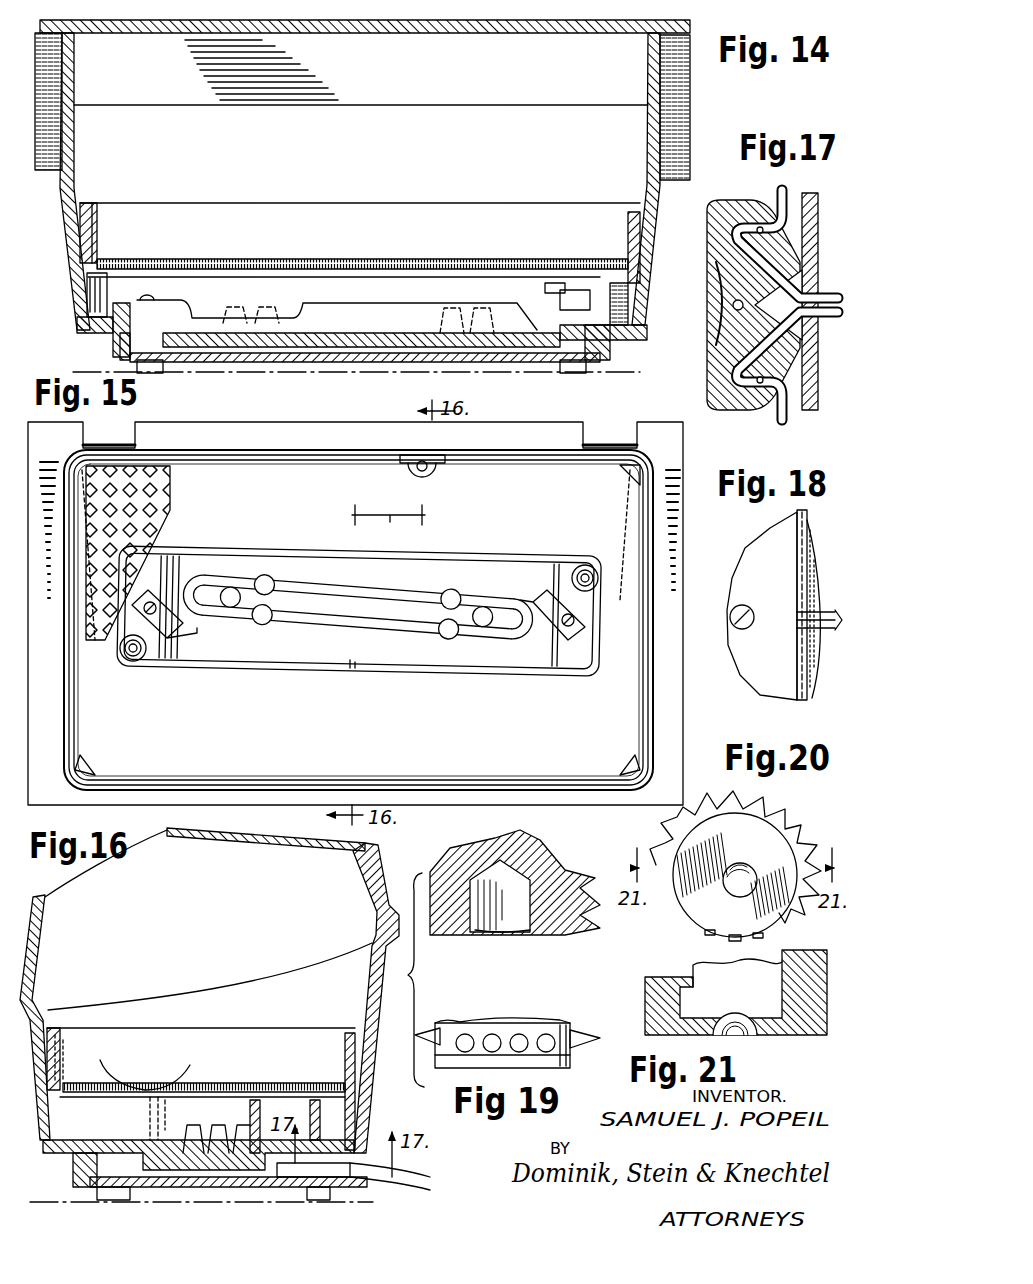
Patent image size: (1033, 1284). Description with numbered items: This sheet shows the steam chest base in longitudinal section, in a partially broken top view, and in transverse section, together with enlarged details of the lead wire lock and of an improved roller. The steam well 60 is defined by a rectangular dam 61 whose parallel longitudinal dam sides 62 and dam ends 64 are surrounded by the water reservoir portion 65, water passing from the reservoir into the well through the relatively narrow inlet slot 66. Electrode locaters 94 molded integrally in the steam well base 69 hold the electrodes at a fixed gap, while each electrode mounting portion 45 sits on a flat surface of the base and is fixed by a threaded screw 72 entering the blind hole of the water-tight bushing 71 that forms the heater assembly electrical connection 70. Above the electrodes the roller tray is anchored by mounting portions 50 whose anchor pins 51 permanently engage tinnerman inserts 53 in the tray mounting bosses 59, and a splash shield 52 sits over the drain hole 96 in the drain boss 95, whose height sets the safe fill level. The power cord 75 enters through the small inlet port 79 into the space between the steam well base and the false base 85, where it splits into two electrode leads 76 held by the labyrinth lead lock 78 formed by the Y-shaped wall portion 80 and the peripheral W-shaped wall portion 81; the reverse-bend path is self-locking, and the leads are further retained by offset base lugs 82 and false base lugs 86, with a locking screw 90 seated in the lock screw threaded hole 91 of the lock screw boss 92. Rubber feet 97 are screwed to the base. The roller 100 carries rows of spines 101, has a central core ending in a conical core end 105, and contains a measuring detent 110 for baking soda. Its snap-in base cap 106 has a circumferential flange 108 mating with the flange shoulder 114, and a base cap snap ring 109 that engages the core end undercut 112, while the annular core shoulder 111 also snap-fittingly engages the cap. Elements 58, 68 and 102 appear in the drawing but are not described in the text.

In FIG. 15, the electrode mounting portion 45 is at (553, 583).
In FIG. 16, the mounting portions 50 is at (262, 1083).
In FIG. 14, the anchor pins 51 is at (572, 262).
In FIG. 16, the anchor pins 51 is at (145, 1083).
In FIG. 16, the splash shield 52 is at (310, 1097).
In FIG. 14, the tinnerman inserts 53 is at (580, 290).
In FIG. 15, the tinnerman inserts 53 is at (588, 565).
In FIG. 16, the tinnerman inserts 53 is at (140, 1100).
In FIG. 14, the handle knob 58 is at (75, 285).
In FIG. 16, the handle knob 58 is at (55, 1120).
In FIG. 14, the tray mounting bosses 59 is at (595, 272).
In FIG. 15, the tray mounting bosses 59 is at (598, 580).
In FIG. 14, the steam well 60 is at (380, 285).
In FIG. 15, the steam well 60 is at (518, 585).
In FIG. 15, the rectangular dam 61 is at (462, 558).
In FIG. 14, the dam sides 62 is at (200, 270).
In FIG. 15, the dam sides 62 is at (268, 590).
In FIG. 14, the dam ends 64 is at (128, 273).
In FIG. 15, the dam ends 64 is at (120, 660).
In FIG. 14, the water reservoir portion 65 is at (625, 296).
In FIG. 15, the water reservoir portion 65 is at (528, 478).
In FIG. 16, the water reservoir portion 65 is at (298, 1097).
In FIG. 15, the inlet slot 66 is at (352, 668).
In FIG. 16, the inlet slot 66 is at (150, 1125).
In FIG. 14, the base 68 is at (630, 318).
In FIG. 16, the base 68 is at (50, 1150).
In FIG. 14, the steam well base 69 is at (370, 322).
In FIG. 15, the steam well base 69 is at (483, 575).
In FIG. 14, the heater assembly electrical connection 70 is at (155, 296).
In FIG. 14, the water-tight bushing 71 is at (118, 350).
In FIG. 15, the threaded screw 72 is at (148, 600).
In FIG. 17, the power cord 75 is at (824, 313).
In FIG. 15, the power cord 75 is at (355, 420).
In FIG. 16, the power cord 75 is at (425, 1177).
In FIG. 18, the power cord 75 is at (805, 605).
In FIG. 17, the electrode leads 76 is at (712, 272).
In FIG. 17, the labyrinth lead lock 78 is at (718, 410).
In FIG. 17, the inlet port 79 is at (810, 270).
In FIG. 16, the inlet port 79 is at (355, 1175).
In FIG. 18, the inlet port 79 is at (818, 650).
In FIG. 17, the Y-shaped wall portion 80 is at (790, 260).
In FIG. 17, the W-shaped wall portion 81 is at (710, 365).
In FIG. 17, the offset base lugs 82 is at (712, 395).
In FIG. 14, the false base 85 is at (455, 362).
In FIG. 16, the false base lugs 86 is at (340, 1185).
In FIG. 18, the locking screw 90 is at (743, 633).
In FIG. 17, the lock screw threaded hole 91 is at (726, 298).
In FIG. 17, the lock screw boss 92 is at (715, 305).
In FIG. 14, the electrode locaters 94 is at (450, 306).
In FIG. 15, the electrode locaters 94 is at (262, 580).
In FIG. 16, the electrode locaters 94 is at (190, 1150).
In FIG. 15, the drain boss 95 is at (440, 470).
In FIG. 16, the drain boss 95 is at (315, 1095).
In FIG. 15, the drain hole 96 is at (408, 468).
In FIG. 16, the drain hole 96 is at (310, 1180).
In FIG. 14, the rubber feet 97 is at (585, 368).
In FIG. 16, the rubber feet 97 is at (110, 1195).
In FIG. 19, the roller 100 is at (585, 890).
In FIG. 20, the spines 101 is at (790, 848).
In FIG. 21, the spines 101 is at (605, 1004).
In FIG. 19, the spines 101 is at (578, 1038).
In FIG. 19, the nut 102 is at (500, 855).
In FIG. 19, the conical core end 105 is at (462, 868).
In FIG. 20, the snap-in base cap 106 is at (730, 852).
In FIG. 21, the snap-in base cap 106 is at (675, 1040).
In FIG. 19, the snap-in base cap 106 is at (500, 1062).
In FIG. 21, the circumferential flange 108 is at (812, 1037).
In FIG. 21, the base cap snap ring 109 is at (822, 975).
In FIG. 20, the measuring detent 110 is at (742, 872).
In FIG. 21, the measuring detent 110 is at (745, 1036).
In FIG. 21, the annular core shoulder 111 is at (690, 985).
In FIG. 21, the core end undercut 112 is at (650, 1010).
In FIG. 21, the flange shoulder 114 is at (805, 1004).
In FIG. 19, the flange shoulder 114 is at (510, 890).